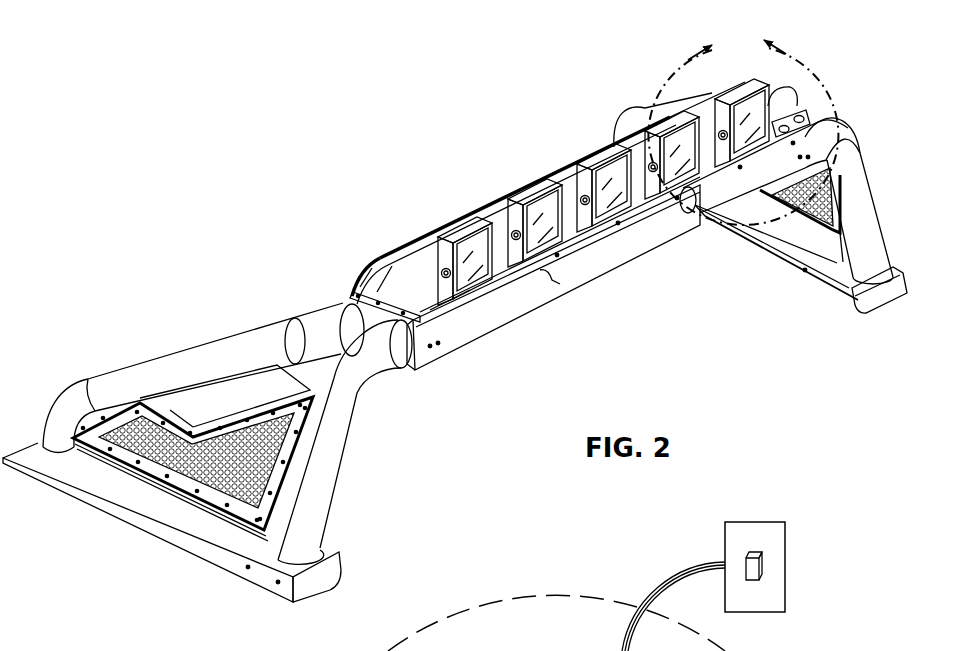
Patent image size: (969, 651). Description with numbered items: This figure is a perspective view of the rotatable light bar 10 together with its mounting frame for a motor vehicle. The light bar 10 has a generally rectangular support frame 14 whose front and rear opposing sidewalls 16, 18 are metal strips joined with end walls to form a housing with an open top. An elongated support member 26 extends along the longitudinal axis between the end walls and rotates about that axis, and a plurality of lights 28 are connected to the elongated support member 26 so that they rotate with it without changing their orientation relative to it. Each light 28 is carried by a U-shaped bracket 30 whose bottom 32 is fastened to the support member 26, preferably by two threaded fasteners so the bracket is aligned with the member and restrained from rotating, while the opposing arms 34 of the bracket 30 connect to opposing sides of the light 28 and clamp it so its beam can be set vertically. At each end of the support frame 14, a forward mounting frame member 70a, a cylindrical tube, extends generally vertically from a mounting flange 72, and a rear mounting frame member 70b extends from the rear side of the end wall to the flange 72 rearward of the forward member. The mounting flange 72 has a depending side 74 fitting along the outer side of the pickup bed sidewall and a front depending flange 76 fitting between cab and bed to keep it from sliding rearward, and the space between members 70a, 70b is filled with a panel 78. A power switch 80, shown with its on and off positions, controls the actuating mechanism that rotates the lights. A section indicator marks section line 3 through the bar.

The section line 3- 3 is at (743, 121).
The rotatable light bar 10 is at (425, 297).
The support frame 14 is at (462, 210).
The front sidewall 16 is at (497, 318).
The rear sidewall 18 is at (427, 227).
The elongated support member 26 is at (433, 310).
The lights 28 is at (533, 188).
The U-shaped bracket 30 is at (582, 228).
The bottom of U-shaped bracket 32 is at (458, 312).
The opposing arms 34 is at (513, 262).
The forward mounting frame member 70a is at (352, 445).
The rear mounting frame member 70b is at (197, 357).
The mounting flange 72 is at (460, 425).
The depending side 74 is at (227, 567).
The front depending flange 76 is at (313, 583).
The panel 78 is at (268, 468).
The power switch 80 is at (768, 522).